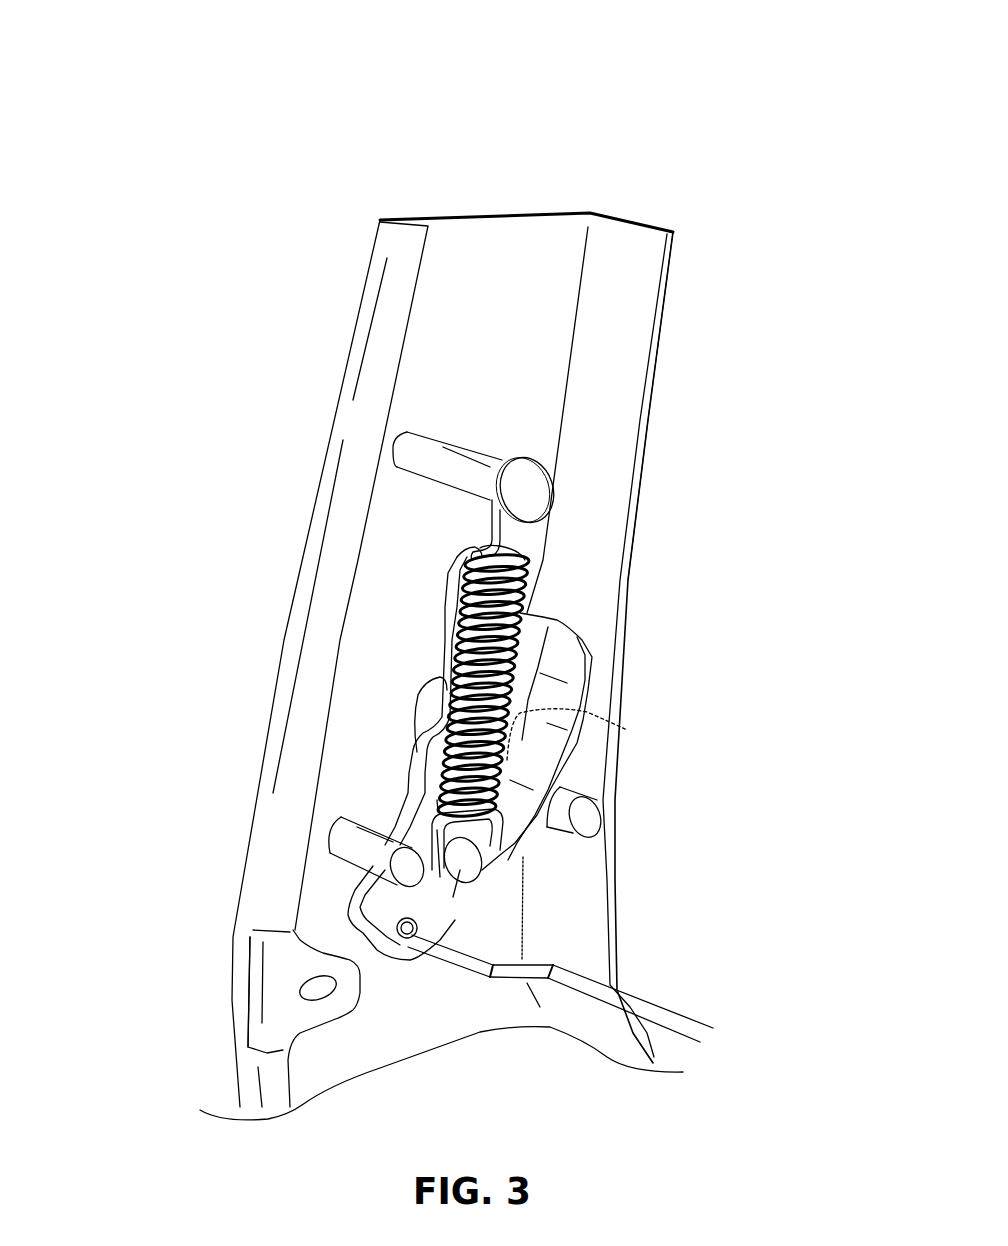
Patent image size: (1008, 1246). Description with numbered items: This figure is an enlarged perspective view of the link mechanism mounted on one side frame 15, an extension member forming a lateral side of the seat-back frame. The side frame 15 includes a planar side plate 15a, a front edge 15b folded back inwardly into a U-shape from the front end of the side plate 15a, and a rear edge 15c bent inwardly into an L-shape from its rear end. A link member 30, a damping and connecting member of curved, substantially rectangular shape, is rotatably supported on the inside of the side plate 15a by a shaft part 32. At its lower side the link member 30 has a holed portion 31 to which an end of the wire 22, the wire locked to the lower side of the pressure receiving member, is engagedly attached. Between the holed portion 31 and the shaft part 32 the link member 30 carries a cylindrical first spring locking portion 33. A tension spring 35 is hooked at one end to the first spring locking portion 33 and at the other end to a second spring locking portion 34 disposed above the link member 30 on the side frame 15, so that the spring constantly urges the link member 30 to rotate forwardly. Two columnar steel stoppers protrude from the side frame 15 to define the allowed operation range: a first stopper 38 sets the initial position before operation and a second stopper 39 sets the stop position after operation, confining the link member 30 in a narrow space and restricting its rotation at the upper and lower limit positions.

The side frame 15 is at (695, 90).
The side plate 15a is at (503, 233).
The front edge 15b is at (407, 233).
The rear edge 15c is at (617, 240).
The wire 22 is at (643, 993).
The link member 30 is at (570, 623).
The holed portion 31 is at (360, 917).
The shaft part 32 is at (600, 717).
The first spring locking portion 33 is at (463, 863).
The second spring locking portion 34 is at (440, 450).
The tension spring 35 is at (440, 632).
The first stopper 38 is at (360, 850).
The second stopper 39 is at (580, 813).